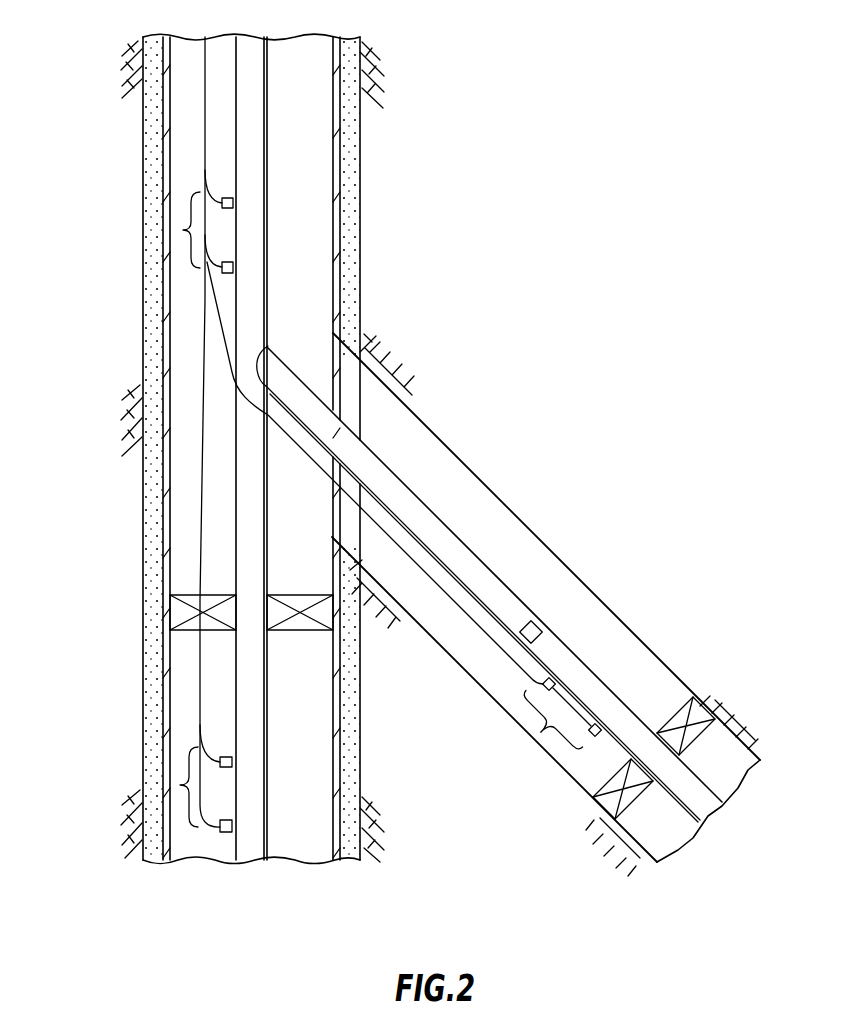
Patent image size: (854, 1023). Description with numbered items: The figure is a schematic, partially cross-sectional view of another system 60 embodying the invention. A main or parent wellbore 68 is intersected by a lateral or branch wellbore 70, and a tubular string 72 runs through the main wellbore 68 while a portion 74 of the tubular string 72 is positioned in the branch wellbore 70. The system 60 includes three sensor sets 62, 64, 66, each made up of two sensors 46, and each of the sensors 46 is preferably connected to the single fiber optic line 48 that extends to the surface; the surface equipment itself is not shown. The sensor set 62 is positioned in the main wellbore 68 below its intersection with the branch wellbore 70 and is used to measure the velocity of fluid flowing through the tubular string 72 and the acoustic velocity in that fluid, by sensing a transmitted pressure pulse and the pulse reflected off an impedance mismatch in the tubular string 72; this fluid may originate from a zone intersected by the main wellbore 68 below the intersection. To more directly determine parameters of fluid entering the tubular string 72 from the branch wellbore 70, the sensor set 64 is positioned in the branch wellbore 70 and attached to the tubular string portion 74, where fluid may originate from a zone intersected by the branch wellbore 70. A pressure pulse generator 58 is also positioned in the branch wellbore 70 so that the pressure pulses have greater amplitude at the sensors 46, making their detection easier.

The sensors 46 is at (233, 199).
The fiber optic line 48 is at (203, 137).
The pressure pulse generator 58 is at (541, 620).
The system 60 is at (394, 455).
The sensor set 62 is at (180, 785).
The sensor set 64 is at (538, 736).
The sensor set 66 is at (183, 230).
The main wellbore 68 is at (168, 546).
The branch wellbore 70 is at (500, 496).
The tubular string 72 is at (272, 688).
The tubular string portion 74 is at (421, 494).